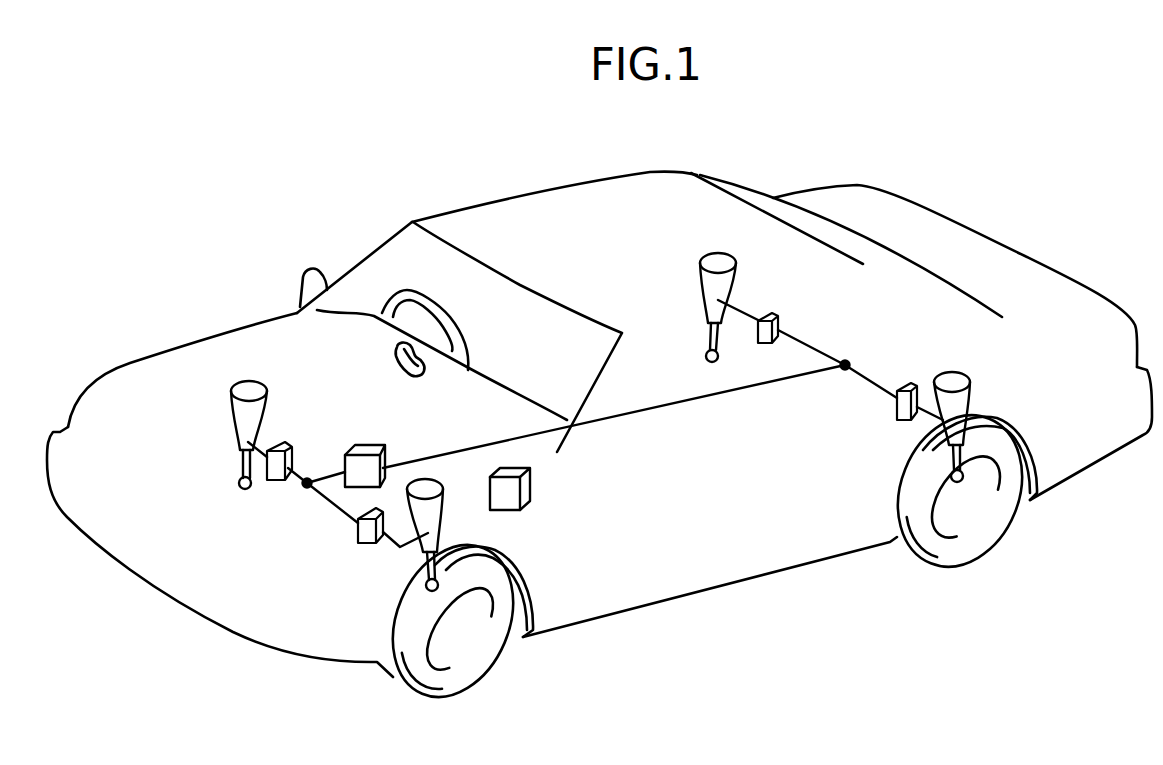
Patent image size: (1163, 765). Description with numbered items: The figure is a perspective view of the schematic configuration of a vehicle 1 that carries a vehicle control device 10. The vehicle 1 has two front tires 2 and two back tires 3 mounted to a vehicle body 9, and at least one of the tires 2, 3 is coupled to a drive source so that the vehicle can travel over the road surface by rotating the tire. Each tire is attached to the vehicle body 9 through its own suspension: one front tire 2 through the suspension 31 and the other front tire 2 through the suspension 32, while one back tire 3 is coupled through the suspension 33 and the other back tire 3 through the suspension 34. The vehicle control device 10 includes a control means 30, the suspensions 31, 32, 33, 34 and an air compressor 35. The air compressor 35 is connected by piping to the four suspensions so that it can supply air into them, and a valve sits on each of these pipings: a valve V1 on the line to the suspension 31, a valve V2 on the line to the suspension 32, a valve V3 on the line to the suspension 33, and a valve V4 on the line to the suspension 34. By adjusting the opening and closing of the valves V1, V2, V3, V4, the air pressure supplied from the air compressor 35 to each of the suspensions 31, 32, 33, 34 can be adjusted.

The vehicle 1 is at (498, 190).
The tire 2 is at (485, 658).
The tire 3 is at (982, 538).
The vehicle body 9 is at (698, 583).
The vehicle control device 10 is at (699, 446).
The control means 30 is at (517, 488).
The suspension 31 is at (237, 413).
The suspension 32 is at (433, 510).
The suspension 33 is at (727, 282).
The suspension 34 is at (963, 397).
The air compressor 35 is at (373, 446).
The valve V1 is at (268, 482).
The valve V2 is at (357, 536).
The valve V3 is at (778, 318).
The valve V4 is at (896, 406).